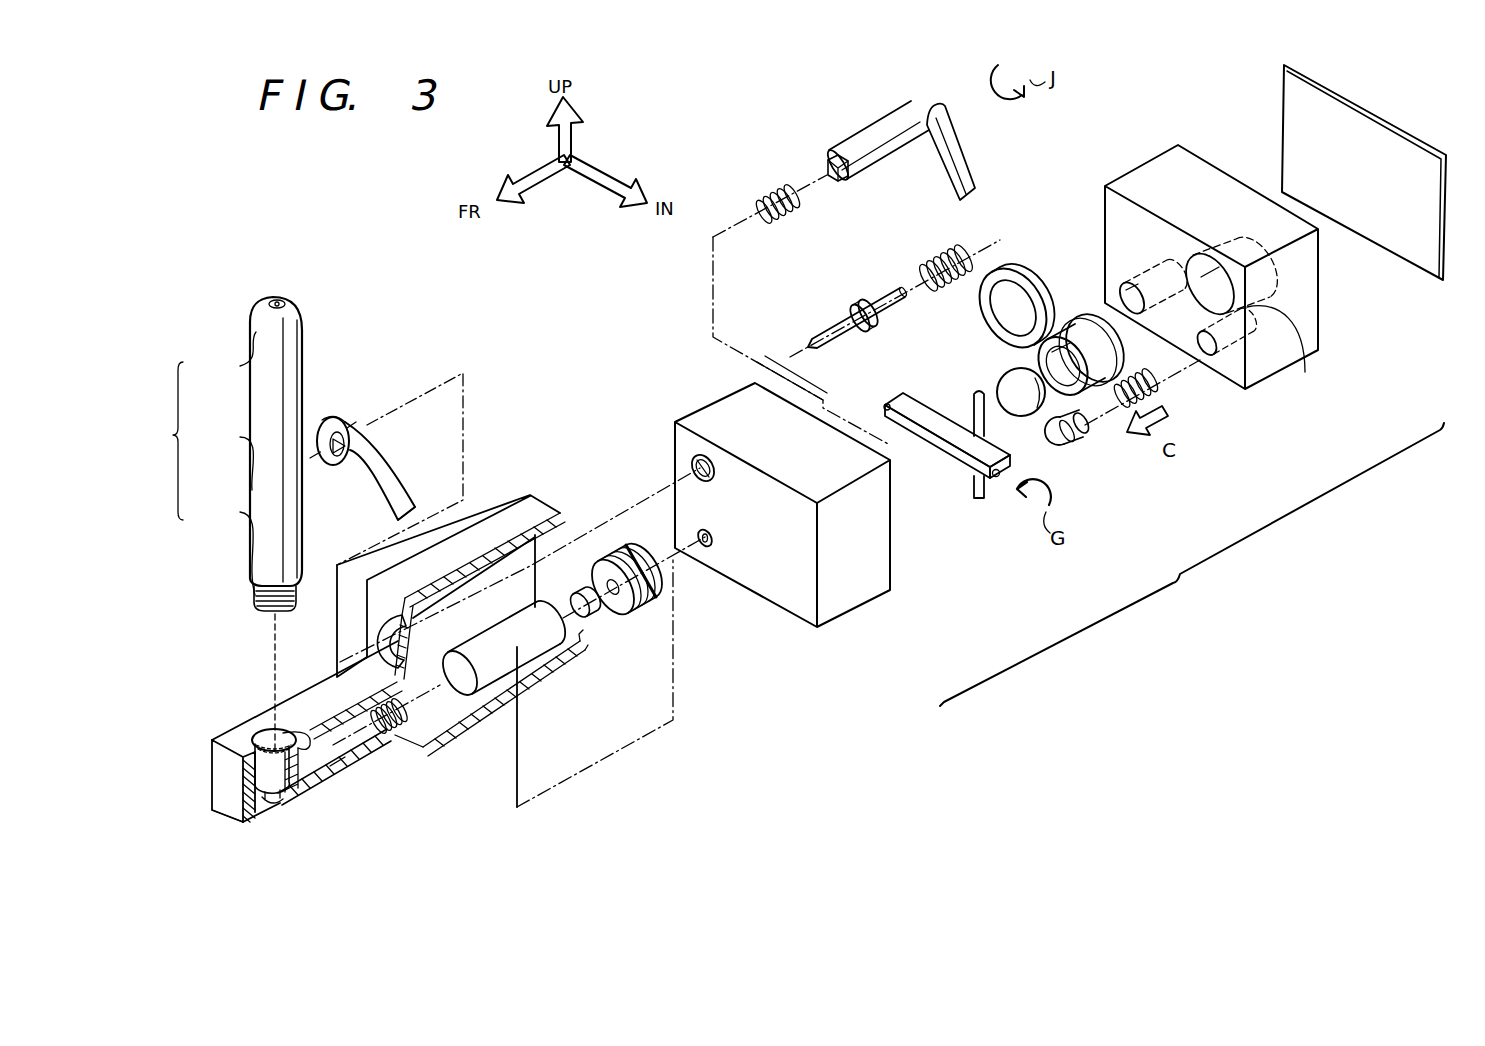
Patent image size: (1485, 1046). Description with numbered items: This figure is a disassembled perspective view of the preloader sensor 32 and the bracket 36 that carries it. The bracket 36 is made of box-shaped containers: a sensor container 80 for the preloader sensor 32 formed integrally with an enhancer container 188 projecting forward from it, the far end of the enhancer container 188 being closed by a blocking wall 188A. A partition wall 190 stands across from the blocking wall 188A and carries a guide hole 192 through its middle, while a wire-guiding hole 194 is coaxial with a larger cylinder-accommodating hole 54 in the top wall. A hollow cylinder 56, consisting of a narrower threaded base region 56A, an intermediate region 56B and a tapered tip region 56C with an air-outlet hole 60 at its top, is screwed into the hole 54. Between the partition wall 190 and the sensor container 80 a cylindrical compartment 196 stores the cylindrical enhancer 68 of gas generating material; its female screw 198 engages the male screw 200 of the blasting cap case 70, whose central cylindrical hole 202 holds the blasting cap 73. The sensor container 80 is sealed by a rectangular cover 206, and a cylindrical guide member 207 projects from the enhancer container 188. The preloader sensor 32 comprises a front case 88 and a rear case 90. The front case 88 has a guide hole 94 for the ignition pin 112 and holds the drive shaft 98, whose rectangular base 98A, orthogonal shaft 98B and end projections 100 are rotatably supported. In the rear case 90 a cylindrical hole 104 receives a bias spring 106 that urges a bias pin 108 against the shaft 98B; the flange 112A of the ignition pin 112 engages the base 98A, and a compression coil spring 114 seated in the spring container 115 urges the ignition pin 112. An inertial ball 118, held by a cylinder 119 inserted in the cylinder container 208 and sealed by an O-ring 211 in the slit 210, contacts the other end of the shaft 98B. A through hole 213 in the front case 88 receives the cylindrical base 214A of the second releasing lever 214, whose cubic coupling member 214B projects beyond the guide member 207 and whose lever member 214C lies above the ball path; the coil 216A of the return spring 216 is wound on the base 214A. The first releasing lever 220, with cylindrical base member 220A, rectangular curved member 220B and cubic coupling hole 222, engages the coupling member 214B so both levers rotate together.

The preloader sensor 32 is at (1192, 564).
The bracket 36 is at (456, 670).
The cylinder-accommodating hole 54 is at (265, 735).
The hollow cylinder 56 is at (164, 441).
The base region 56A is at (220, 546).
The intermediate region 56B is at (220, 455).
The tip region 56C is at (221, 354).
The air-outlet hole 60 is at (276, 296).
The cylindrical enhancer 68 is at (458, 677).
The blasting cap case 70 is at (609, 611).
The blasting cap 73 is at (590, 618).
The sensor container 80 is at (490, 790).
The front case 88 is at (759, 406).
The rear case 90 is at (1212, 264).
The guide hole 94 is at (701, 546).
The drive shaft 98 is at (948, 472).
The base 98A is at (947, 455).
The shaft 98B is at (978, 502).
The small projections 100 is at (887, 405).
The cylindrical hole 104 is at (1210, 358).
The bias spring 106 is at (1124, 402).
The bias pin 108 is at (1066, 446).
The ignition pin 112 is at (885, 298).
The flange 112A is at (814, 332).
The compression coil spring 114 is at (935, 255).
The spring container 115 is at (1122, 286).
The inertial ball 118 is at (997, 380).
The cylinder 119 is at (1040, 361).
The enhancer container 188 is at (325, 790).
The blocking wall 188A is at (255, 815).
The partition wall 190 is at (300, 792).
The guide hole 192 is at (300, 738).
The wire-guiding hole 194 is at (278, 808).
The cylindrical compartment 196 is at (352, 752).
The female screw 198 is at (386, 744).
The male screw 200 is at (646, 607).
The cylindrical hole 202 is at (606, 587).
The rectangular cover 206 is at (1428, 283).
The guide member 207 is at (365, 632).
The cylinder container 208 is at (1305, 373).
The slit 210 is at (1028, 345).
The O-ring 211 is at (983, 300).
The through hole 213 is at (693, 469).
The second releasing lever 214 is at (876, 129).
The cylindrical base 214A is at (875, 140).
The coupling member 214B is at (830, 168).
The lever member 214C is at (945, 160).
The return spring 216 is at (778, 205).
The coil 216A is at (790, 215).
The first releasing lever 220 is at (386, 439).
The base member 220A is at (357, 420).
The curved member 220B is at (395, 483).
The coupling hole 222 is at (336, 455).